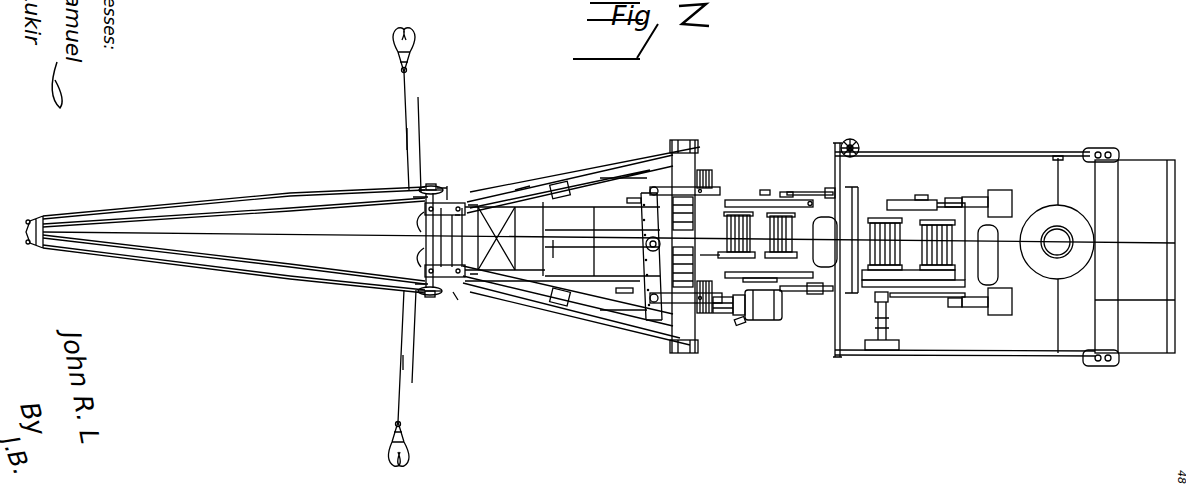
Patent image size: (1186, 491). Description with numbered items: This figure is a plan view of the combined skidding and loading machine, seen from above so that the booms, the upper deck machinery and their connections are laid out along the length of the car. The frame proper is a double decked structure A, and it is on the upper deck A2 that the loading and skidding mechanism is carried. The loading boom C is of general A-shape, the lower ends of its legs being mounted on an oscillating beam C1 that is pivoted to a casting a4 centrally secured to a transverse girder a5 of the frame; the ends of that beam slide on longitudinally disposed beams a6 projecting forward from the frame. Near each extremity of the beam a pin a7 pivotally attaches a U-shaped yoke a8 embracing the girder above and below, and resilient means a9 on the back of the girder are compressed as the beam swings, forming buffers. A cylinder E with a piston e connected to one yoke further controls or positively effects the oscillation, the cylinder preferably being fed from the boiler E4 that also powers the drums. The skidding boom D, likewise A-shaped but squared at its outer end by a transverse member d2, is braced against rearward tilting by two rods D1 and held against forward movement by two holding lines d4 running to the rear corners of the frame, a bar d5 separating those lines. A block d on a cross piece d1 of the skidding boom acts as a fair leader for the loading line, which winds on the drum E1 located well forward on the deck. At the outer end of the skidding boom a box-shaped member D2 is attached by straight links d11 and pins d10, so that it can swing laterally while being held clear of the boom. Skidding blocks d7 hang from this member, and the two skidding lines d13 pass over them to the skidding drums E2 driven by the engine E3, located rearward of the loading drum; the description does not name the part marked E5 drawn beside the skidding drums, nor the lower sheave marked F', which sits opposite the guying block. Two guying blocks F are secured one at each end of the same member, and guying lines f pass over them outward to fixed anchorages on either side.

The double decked frame structure A is at (913, 156).
The upper deck A2 is at (1057, 319).
The loading boom C is at (300, 268).
The oscillating beam C1 is at (375, 236).
The skidding boom D is at (522, 287).
The brace rods D1 is at (692, 163).
The movable box-shaped member D2 is at (428, 265).
The block d is at (558, 257).
The cross piece d1 is at (520, 190).
The transverse member d2 is at (457, 214).
The holding lines d4 is at (472, 210).
The spacer bar d5 is at (840, 337).
The skidding blocks d7 is at (413, 226).
The pins d10 is at (437, 188).
The straight links d11 is at (413, 197).
The skidding lines d13 is at (372, 128).
The cylinder E is at (770, 320).
The loading winding drum E1 is at (727, 200).
The skidding drums E2 is at (937, 222).
The skidding engine E3 is at (997, 198).
The boiler E4 is at (1043, 220).
The bracket E5 is at (845, 197).
The guying blocks F is at (431, 220).
The lower sheave F' is at (430, 308).
The casting a4 is at (647, 246).
The transverse girder a5 is at (673, 337).
The longitudinal beams a6 is at (627, 200).
The pin a7 is at (647, 187).
The yoke a8 is at (663, 187).
The resilient buffer means a9 is at (700, 175).
The piston e is at (739, 327).
The guying lines f is at (420, 101).